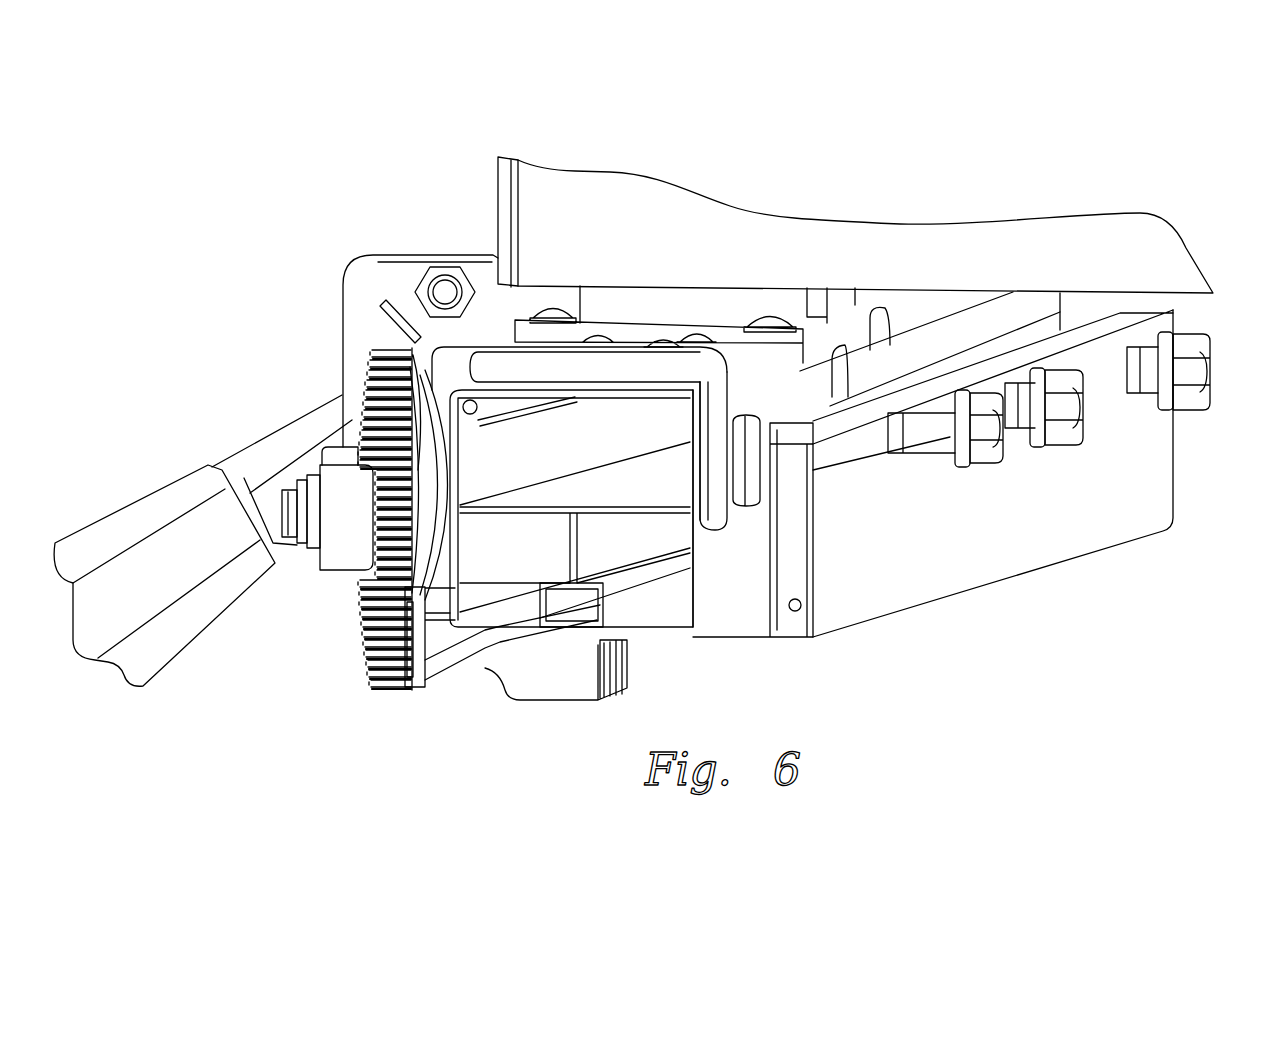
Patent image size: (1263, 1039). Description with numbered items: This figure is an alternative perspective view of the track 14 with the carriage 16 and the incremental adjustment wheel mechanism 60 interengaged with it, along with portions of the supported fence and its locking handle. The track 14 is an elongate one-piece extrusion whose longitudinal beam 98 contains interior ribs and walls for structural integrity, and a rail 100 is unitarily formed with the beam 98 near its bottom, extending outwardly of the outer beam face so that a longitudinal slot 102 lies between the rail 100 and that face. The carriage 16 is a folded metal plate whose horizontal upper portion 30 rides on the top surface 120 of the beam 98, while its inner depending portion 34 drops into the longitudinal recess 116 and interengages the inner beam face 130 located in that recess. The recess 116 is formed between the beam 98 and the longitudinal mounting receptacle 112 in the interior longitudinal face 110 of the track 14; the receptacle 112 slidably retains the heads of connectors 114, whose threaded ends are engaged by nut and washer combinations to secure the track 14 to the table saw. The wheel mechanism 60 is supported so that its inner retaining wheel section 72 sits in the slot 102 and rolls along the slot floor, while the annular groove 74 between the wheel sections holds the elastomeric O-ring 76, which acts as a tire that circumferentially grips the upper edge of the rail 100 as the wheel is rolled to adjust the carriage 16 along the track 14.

The track 14 is at (1035, 500).
The carriage 16 is at (437, 340).
The horizontal upper portion 30 is at (687, 367).
The inner depending portion 34 is at (740, 518).
The incremental adjustment wheel mechanism 60 is at (372, 362).
The inner wheel section 72 is at (443, 467).
The annular groove 74 is at (410, 490).
The O-ring 76 is at (420, 550).
The longitudinal beam 98 is at (667, 630).
The rail 100 is at (410, 687).
The longitudinal slot 102 is at (433, 603).
The interior longitudinal face 110 is at (1133, 473).
The longitudinal mounting receptacle 112 is at (840, 445).
The connectors 114 is at (1057, 447).
The longitudinal recess 116 is at (723, 553).
The top surface 120 is at (633, 380).
The inner beam face 130 is at (703, 478).